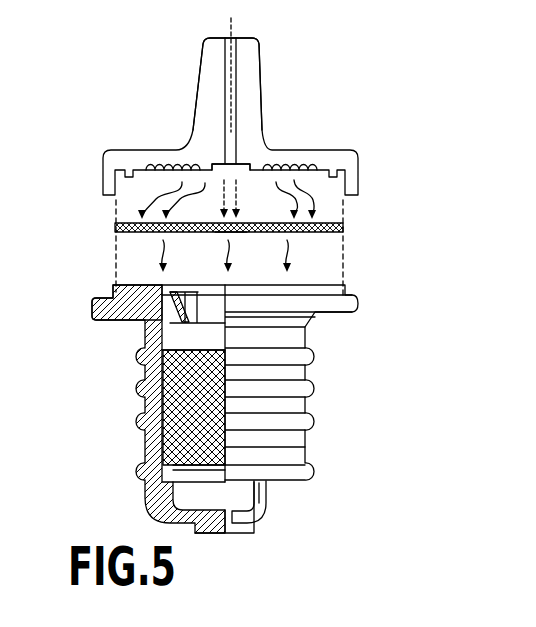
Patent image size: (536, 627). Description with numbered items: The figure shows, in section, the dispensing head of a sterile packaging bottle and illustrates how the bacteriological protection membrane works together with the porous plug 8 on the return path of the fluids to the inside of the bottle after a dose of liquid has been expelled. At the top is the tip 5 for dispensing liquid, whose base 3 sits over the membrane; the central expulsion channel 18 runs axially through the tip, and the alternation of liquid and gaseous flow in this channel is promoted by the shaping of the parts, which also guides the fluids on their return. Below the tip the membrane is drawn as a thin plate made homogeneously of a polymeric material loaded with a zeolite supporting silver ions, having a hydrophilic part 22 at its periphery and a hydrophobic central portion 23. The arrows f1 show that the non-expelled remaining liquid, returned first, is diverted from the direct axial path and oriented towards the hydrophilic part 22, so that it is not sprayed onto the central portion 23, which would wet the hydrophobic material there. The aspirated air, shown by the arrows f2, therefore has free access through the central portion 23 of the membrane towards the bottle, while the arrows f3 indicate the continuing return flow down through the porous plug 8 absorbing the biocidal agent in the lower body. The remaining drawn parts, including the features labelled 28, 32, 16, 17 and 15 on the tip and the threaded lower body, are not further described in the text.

The tip 5 is at (135, 96).
The base 3 is at (130, 168).
The expulsion channel 18 is at (237, 63).
The channel slot 28 is at (262, 130).
The ribs on cap underside 32 is at (145, 176).
The return path of remaining liquid f1 is at (303, 190).
The flow of aspirated air f2 is at (237, 200).
The flow path f3 is at (292, 257).
The hydrophilic part of the membrane 22 is at (330, 230).
The central portion of the membrane 23 is at (235, 233).
The flange 16 is at (160, 290).
The sleeve wall 17 is at (148, 319).
The thread 15 is at (312, 385).
The porous plug 8 is at (180, 427).